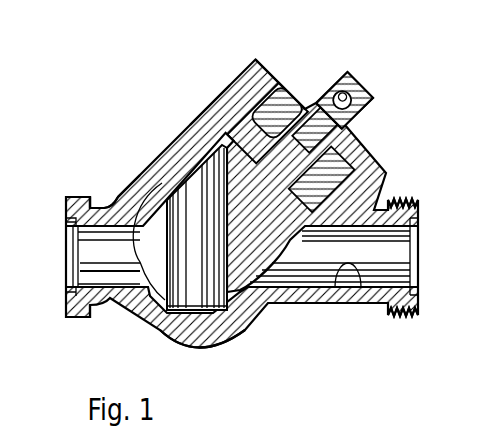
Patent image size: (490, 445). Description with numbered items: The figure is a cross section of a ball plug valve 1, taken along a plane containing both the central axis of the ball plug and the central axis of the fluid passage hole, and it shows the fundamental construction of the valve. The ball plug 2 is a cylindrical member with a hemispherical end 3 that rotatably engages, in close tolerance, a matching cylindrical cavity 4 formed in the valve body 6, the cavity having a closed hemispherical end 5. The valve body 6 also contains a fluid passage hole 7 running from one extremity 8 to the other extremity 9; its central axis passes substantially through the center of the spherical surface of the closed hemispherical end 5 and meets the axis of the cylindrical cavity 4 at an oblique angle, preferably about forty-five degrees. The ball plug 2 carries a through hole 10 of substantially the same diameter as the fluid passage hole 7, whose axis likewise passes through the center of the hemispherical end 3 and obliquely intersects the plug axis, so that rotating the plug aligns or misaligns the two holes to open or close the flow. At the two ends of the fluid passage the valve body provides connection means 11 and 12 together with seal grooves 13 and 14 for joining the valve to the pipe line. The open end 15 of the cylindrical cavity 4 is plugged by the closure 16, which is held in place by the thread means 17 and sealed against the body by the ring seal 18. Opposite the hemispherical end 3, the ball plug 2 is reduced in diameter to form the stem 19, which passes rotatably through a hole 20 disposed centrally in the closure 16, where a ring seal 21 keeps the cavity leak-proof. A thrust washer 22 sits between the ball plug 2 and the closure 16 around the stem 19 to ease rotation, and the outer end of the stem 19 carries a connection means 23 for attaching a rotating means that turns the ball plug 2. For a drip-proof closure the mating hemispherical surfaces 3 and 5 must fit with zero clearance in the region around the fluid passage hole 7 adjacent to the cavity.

The ball plug valve 1 is at (242, 220).
The ball plug 2 is at (298, 240).
The hemispherical end 3 is at (118, 292).
The cylindrical cavity 4 is at (133, 200).
The closed hemispherical end 5 is at (133, 258).
The valve body 6 is at (157, 320).
The fluid passage hole 7 is at (352, 285).
The extremity 8 is at (66, 307).
The extremity 9 is at (418, 212).
The through hole 10 is at (166, 178).
The connection means 11 is at (77, 200).
The connection means 12 is at (389, 198).
The seal groove 13 is at (64, 222).
The seal groove 14 is at (418, 283).
The open end 15 is at (292, 80).
The closure 16 is at (295, 100).
The thread means 17 is at (253, 77).
The ring seal 18 is at (352, 175).
The stem 19 is at (355, 143).
The hole 20 is at (318, 120).
The ring seal 21 is at (325, 178).
The thrust washer 22 is at (213, 104).
The connection means 23 is at (350, 92).